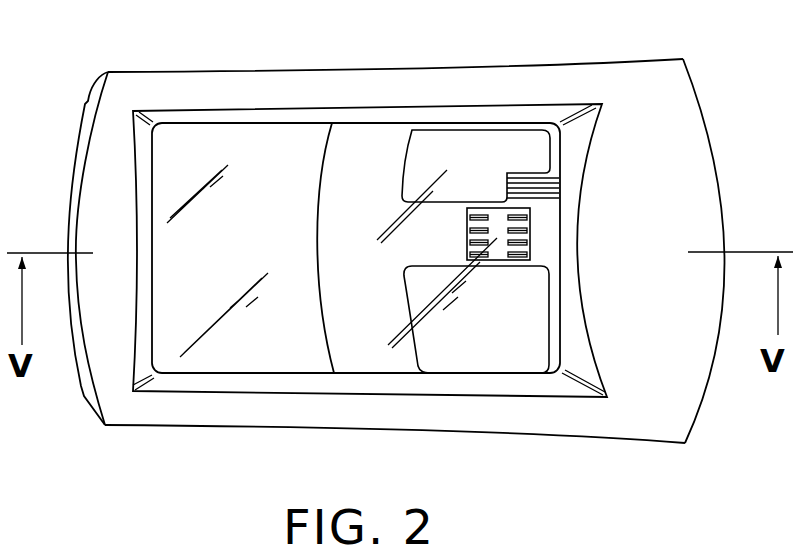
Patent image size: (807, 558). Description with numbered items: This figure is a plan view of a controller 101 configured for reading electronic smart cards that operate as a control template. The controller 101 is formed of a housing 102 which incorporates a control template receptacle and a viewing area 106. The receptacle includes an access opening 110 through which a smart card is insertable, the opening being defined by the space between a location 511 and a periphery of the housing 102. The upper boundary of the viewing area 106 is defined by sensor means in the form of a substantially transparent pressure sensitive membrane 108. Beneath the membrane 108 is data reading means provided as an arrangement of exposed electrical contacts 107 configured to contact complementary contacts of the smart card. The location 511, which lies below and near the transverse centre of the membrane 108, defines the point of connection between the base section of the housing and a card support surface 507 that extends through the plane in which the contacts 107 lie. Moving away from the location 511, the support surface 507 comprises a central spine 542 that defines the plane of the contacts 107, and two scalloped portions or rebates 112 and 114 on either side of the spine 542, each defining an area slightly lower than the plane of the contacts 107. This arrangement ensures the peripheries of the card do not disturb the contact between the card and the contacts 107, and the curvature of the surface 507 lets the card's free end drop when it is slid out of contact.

The controller 101 is at (724, 96).
The housing 102 is at (693, 199).
The access opening 110 is at (72, 116).
The viewing area 106 is at (368, 278).
The pressure sensitive membrane 108 is at (237, 352).
The location 511 is at (330, 343).
The card support surface 507 is at (364, 152).
The central spine 542 is at (427, 237).
The scalloped portion 112 is at (479, 159).
The electrical contacts 107 is at (525, 206).
The scalloped portion 114 is at (491, 346).